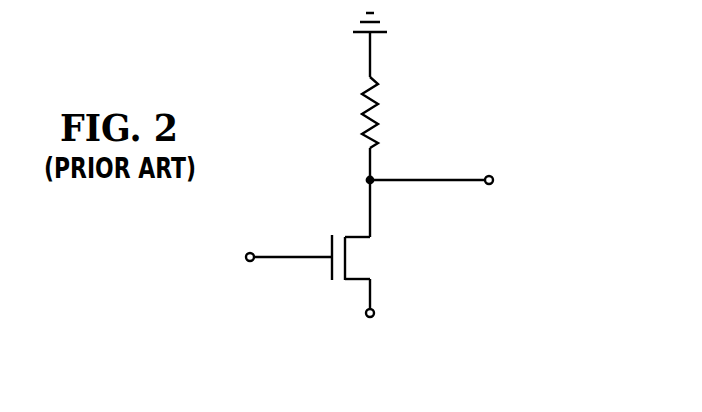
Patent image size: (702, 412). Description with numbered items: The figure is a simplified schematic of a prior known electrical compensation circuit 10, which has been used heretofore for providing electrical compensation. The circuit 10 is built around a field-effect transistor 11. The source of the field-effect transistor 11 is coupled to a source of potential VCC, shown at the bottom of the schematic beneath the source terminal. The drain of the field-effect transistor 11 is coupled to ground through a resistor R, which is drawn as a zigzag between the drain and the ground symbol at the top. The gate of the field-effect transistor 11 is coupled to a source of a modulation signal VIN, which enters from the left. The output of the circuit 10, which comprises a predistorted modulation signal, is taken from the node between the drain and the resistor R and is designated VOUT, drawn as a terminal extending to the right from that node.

The electrical compensation circuit 10 is at (496, 70).
The field-effect transistor 11 is at (334, 288).
The resistor R is at (387, 112).
The modulation signal source VIN is at (222, 250).
The predistorted modulation signal output VOUT is at (514, 182).
The source of potential VCC is at (361, 331).